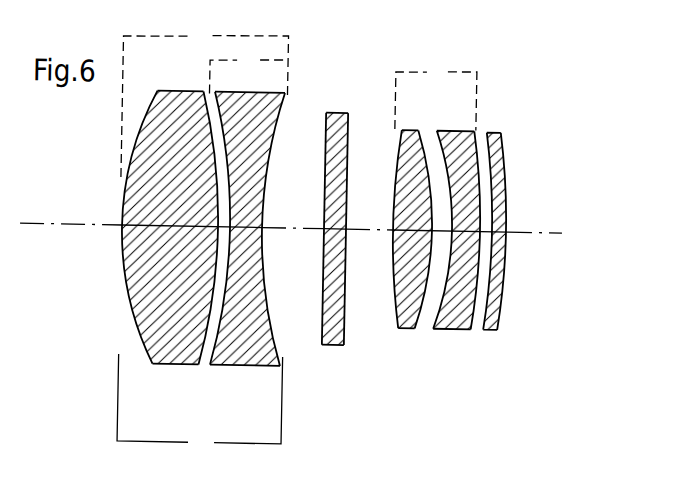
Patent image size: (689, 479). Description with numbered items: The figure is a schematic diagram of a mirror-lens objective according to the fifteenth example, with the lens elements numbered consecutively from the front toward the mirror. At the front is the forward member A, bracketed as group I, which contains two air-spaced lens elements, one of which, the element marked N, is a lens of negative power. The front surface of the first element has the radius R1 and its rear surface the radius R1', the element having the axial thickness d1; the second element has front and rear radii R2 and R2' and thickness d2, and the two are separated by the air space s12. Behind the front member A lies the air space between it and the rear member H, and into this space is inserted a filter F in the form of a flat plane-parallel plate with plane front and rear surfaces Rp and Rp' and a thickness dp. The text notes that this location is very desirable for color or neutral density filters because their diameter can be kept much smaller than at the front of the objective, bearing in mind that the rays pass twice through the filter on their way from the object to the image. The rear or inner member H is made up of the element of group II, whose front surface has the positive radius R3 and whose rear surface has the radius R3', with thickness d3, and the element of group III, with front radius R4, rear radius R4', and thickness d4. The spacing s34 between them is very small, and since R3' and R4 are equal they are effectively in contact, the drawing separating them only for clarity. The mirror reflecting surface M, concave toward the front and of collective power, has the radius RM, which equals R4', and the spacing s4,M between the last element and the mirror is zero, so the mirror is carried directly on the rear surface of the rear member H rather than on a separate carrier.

The front member A is at (205, 101).
The negative lens element N is at (248, 71).
The rear member H is at (436, 93).
The lens group I is at (200, 435).
The lens group II is at (411, 423).
The lens group III is at (472, 422).
The mirror reflecting surface M is at (516, 250).
The filter F is at (339, 202).
The radius of front surface of element 1 R1 is at (120, 226).
The radius of rear surface of element 1 R1' is at (172, 205).
The radius of front surface of element 2 R2 is at (200, 209).
The radius of rear surface of element 2 R2' is at (290, 215).
The radius of front surface of element 3 R3 is at (383, 225).
The radius of rear surface of element 3 R3' is at (418, 205).
The radius of front surface of element 4 R4 is at (448, 208).
The radius of rear surface of element 4 R4' is at (492, 204).
The radius of mirror surface RM is at (500, 139).
The radius of front surface of filter Rp is at (309, 232).
The radius of rear surface of filter Rp' is at (364, 233).
The thickness of element 1 d1 is at (163, 228).
The thickness of element 2 d2 is at (246, 231).
The thickness of filter dp is at (338, 230).
The thickness of element 3 d3 is at (414, 232).
The thickness of element 4 d4 is at (469, 233).
The space between elements 1 and 2 s12 is at (206, 387).
The space between elements 3 and 4 s34 is at (430, 354).
The space between element 4 and the mirror s4,M is at (508, 222).